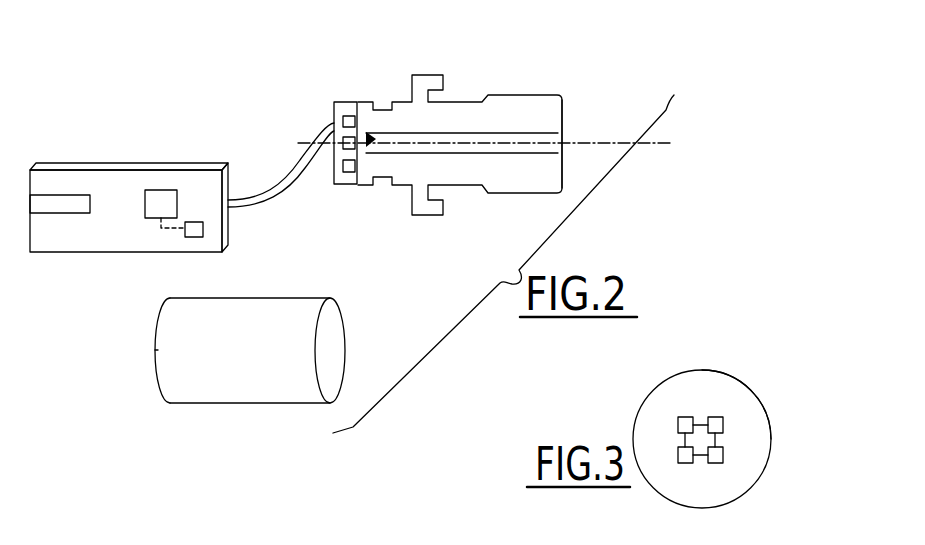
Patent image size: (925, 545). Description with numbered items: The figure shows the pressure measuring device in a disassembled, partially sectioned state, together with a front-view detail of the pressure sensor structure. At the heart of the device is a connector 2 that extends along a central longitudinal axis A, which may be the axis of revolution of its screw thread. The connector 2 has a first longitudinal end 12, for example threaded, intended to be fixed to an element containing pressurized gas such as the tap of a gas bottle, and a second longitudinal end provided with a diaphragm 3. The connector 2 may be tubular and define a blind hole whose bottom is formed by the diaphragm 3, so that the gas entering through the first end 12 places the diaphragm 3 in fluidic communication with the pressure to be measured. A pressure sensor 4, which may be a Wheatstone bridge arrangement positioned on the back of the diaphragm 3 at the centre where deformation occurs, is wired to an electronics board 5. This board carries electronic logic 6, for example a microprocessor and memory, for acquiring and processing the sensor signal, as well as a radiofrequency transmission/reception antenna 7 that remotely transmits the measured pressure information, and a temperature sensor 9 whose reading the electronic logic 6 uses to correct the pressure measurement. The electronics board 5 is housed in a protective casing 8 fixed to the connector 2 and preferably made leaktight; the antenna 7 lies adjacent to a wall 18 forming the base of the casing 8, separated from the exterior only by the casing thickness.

In FIG. 2, the connector 2 is at (503, 175).
In FIG. 3, the connector 2 is at (765, 417).
In FIG. 2, the diaphragm 3 is at (371, 134).
In FIG. 3, the diaphragm 3 is at (740, 390).
In FIG. 2, the pressure sensor 4 is at (345, 145).
In FIG. 3, the pressure sensor 4 is at (685, 408).
In FIG. 2, the electronics board 5 is at (106, 227).
In FIG. 2, the electronic logic 6 is at (160, 200).
In FIG. 2, the transmission/reception antenna 7 is at (57, 203).
In FIG. 2, the protective casing 8 is at (200, 377).
In FIG. 2, the temperature sensor 9 is at (193, 238).
In FIG. 2, the first longitudinal end 12 is at (572, 113).
In FIG. 2, the wall 18 is at (146, 357).
In FIG. 2, the central longitudinal axis A is at (625, 143).